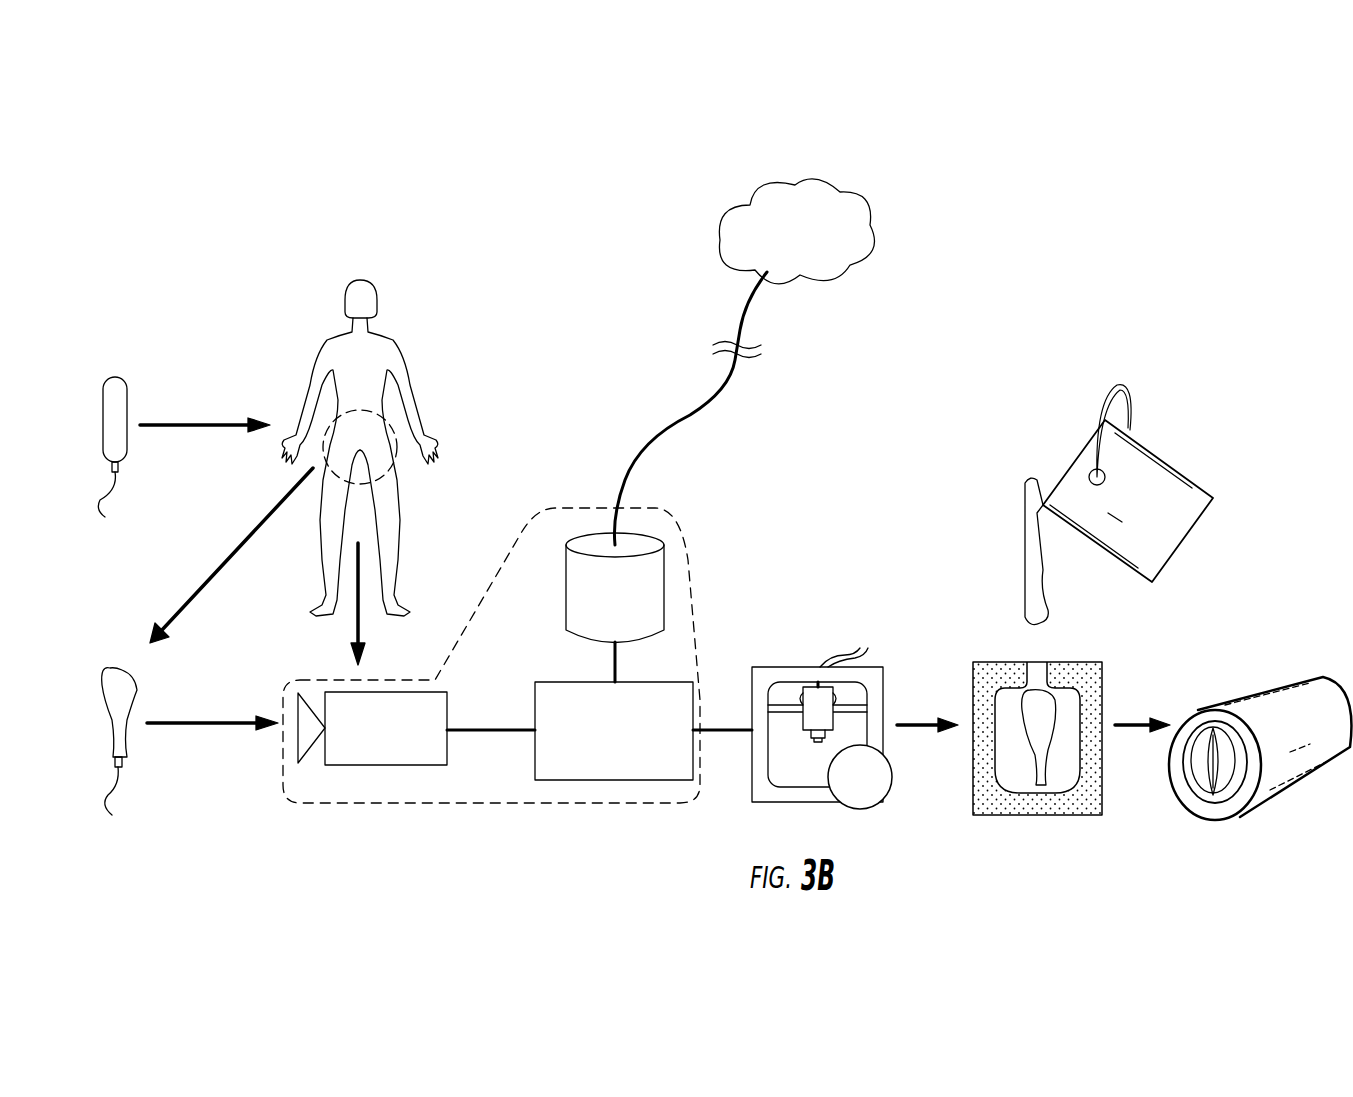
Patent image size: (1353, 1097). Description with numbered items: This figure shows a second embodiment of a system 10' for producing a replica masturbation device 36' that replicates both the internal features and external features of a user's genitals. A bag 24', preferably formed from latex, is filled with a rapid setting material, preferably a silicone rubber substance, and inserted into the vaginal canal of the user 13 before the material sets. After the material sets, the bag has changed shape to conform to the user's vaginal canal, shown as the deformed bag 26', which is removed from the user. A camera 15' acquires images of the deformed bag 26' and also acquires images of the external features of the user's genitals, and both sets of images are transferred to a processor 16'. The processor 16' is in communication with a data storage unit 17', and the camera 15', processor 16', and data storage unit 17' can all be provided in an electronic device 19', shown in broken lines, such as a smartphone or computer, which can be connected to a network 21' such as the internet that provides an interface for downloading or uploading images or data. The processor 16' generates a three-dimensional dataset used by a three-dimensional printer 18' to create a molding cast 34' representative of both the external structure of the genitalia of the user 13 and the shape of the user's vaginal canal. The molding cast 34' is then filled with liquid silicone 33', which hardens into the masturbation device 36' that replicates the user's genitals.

The user 13 is at (362, 275).
The bag 24' is at (170, 443).
The deformed bag 26' is at (191, 641).
The camera 15' is at (372, 706).
The processor 16' is at (608, 710).
The data storage unit 17' is at (600, 606).
The electronic device 19' is at (491, 636).
The network 21' is at (744, 340).
The 3D printer 18' is at (850, 719).
The system 10' is at (936, 468).
The liquid silicone 33' is at (1119, 505).
The molding cast 34' is at (1067, 721).
The replica masturbation device 36' is at (1260, 728).